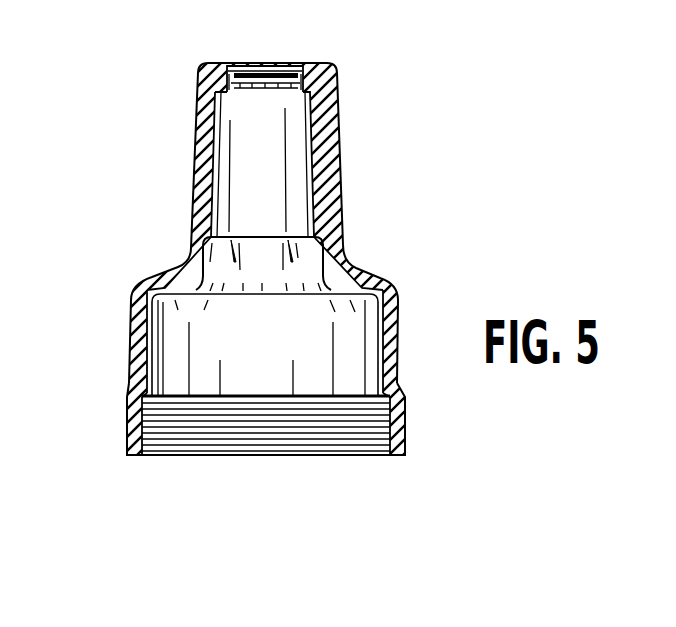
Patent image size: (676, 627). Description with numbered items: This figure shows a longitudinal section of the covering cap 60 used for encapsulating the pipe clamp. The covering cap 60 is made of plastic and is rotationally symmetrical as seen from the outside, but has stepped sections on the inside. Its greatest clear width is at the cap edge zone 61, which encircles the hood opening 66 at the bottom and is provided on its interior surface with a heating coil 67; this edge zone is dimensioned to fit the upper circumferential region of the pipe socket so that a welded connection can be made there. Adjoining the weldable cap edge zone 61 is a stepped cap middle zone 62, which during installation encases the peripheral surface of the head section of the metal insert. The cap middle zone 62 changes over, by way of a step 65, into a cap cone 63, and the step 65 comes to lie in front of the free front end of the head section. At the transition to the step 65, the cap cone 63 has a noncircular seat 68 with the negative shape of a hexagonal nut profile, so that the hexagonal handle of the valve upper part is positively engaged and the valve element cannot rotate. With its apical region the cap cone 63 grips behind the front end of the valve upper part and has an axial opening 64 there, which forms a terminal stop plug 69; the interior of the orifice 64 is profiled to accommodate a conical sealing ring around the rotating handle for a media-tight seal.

The covering cap 60 is at (369, 82).
The cap edge zone 61 is at (120, 393).
The cap middle zone 62 is at (127, 277).
The cap cone 63 is at (197, 62).
The axial opening 64 is at (277, 61).
The step 65 is at (378, 274).
The hood opening 66 is at (333, 468).
The heating coil 67 is at (257, 438).
The noncircular seat 68 is at (320, 243).
The terminal stop plug 69 is at (227, 72).